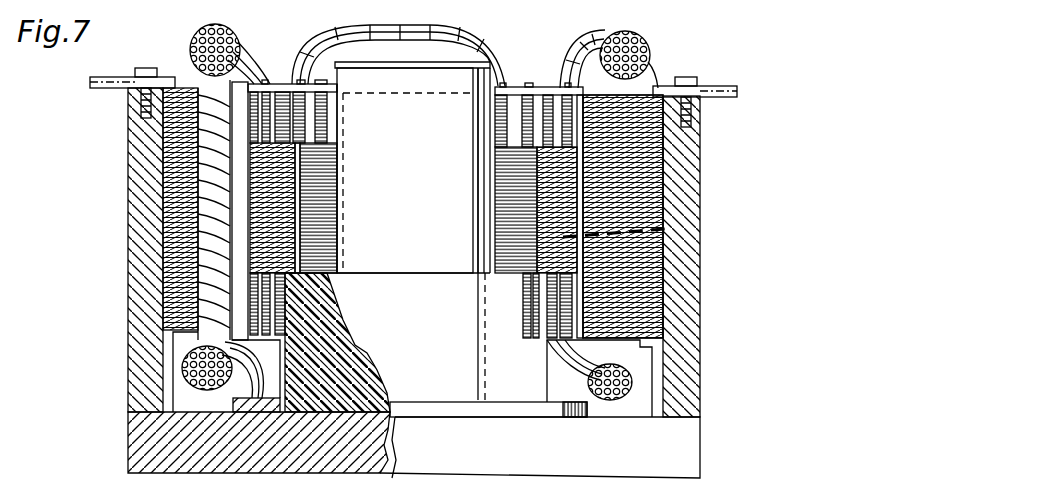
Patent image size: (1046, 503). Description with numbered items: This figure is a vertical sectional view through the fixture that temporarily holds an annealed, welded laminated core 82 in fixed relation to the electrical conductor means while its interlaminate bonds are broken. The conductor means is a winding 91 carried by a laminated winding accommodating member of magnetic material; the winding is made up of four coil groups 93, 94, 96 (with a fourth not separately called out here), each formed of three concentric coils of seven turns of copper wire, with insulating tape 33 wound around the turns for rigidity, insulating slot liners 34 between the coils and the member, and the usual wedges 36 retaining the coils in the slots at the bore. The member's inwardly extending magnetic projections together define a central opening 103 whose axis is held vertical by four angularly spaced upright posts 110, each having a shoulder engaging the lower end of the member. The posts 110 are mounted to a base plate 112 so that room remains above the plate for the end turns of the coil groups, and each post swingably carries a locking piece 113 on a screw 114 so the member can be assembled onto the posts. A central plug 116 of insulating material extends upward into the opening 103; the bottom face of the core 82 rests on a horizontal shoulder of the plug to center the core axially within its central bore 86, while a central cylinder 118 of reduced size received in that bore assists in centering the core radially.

The insulating tape 33 is at (258, 58).
The insulating slot liner 34 is at (630, 88).
The wedge 36 is at (267, 348).
The laminated core 82 is at (667, 223).
The central bore 86 is at (333, 212).
The winding 91 is at (593, 398).
The coil group 93 is at (437, 25).
The coil group 94 is at (200, 25).
The coil group 96 is at (643, 42).
The central opening 103 is at (655, 193).
The upright post 110 is at (127, 268).
The base plate 112 is at (138, 450).
The locking piece 113 is at (170, 85).
The screw 114 is at (147, 70).
The central plug 116 is at (330, 342).
The central cylinder 118 is at (387, 167).